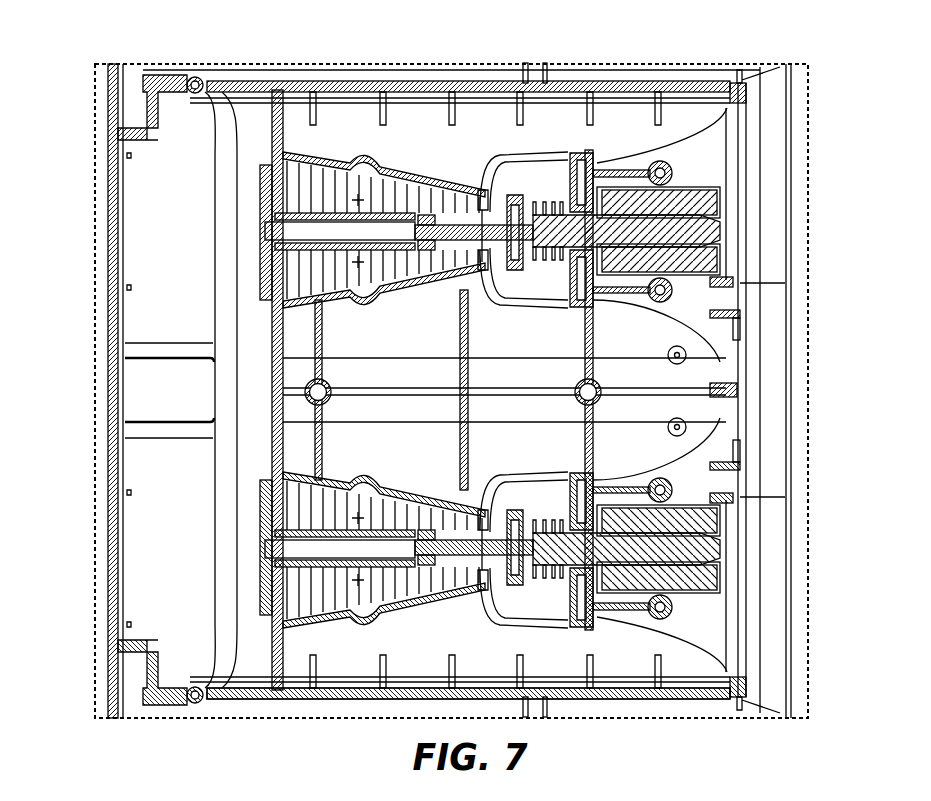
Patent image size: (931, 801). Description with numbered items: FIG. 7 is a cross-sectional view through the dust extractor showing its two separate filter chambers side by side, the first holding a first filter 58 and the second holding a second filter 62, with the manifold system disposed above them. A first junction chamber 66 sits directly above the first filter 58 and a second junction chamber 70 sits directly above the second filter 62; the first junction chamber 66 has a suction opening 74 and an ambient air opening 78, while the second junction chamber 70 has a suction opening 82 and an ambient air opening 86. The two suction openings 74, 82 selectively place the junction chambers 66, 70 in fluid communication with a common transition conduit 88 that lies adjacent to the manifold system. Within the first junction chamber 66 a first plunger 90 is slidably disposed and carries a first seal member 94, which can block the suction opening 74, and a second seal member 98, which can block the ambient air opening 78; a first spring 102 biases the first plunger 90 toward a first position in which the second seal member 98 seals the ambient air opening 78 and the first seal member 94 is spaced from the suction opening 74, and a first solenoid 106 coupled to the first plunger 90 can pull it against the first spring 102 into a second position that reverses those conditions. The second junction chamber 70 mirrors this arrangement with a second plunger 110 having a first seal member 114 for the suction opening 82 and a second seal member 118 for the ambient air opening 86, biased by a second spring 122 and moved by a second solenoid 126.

The first filter 58 is at (280, 687).
The second filter 62 is at (432, 207).
The first junction chamber 66 is at (362, 548).
The second junction chamber 70 is at (365, 185).
The suction opening 74 is at (277, 583).
The ambient air opening 78 is at (485, 575).
The suction opening 82 is at (293, 188).
The ambient air opening 86 is at (490, 212).
The common transition conduit 88 is at (168, 388).
The first plunger 90 is at (318, 572).
The first seal member 94 is at (273, 487).
The second seal member 98 is at (522, 462).
The first spring 102 is at (575, 622).
The first solenoid 106 is at (700, 560).
The second plunger 110 is at (398, 226).
The first seal member 114 is at (268, 163).
The second seal member 118 is at (545, 200).
The second spring 122 is at (593, 165).
The second solenoid 126 is at (685, 200).